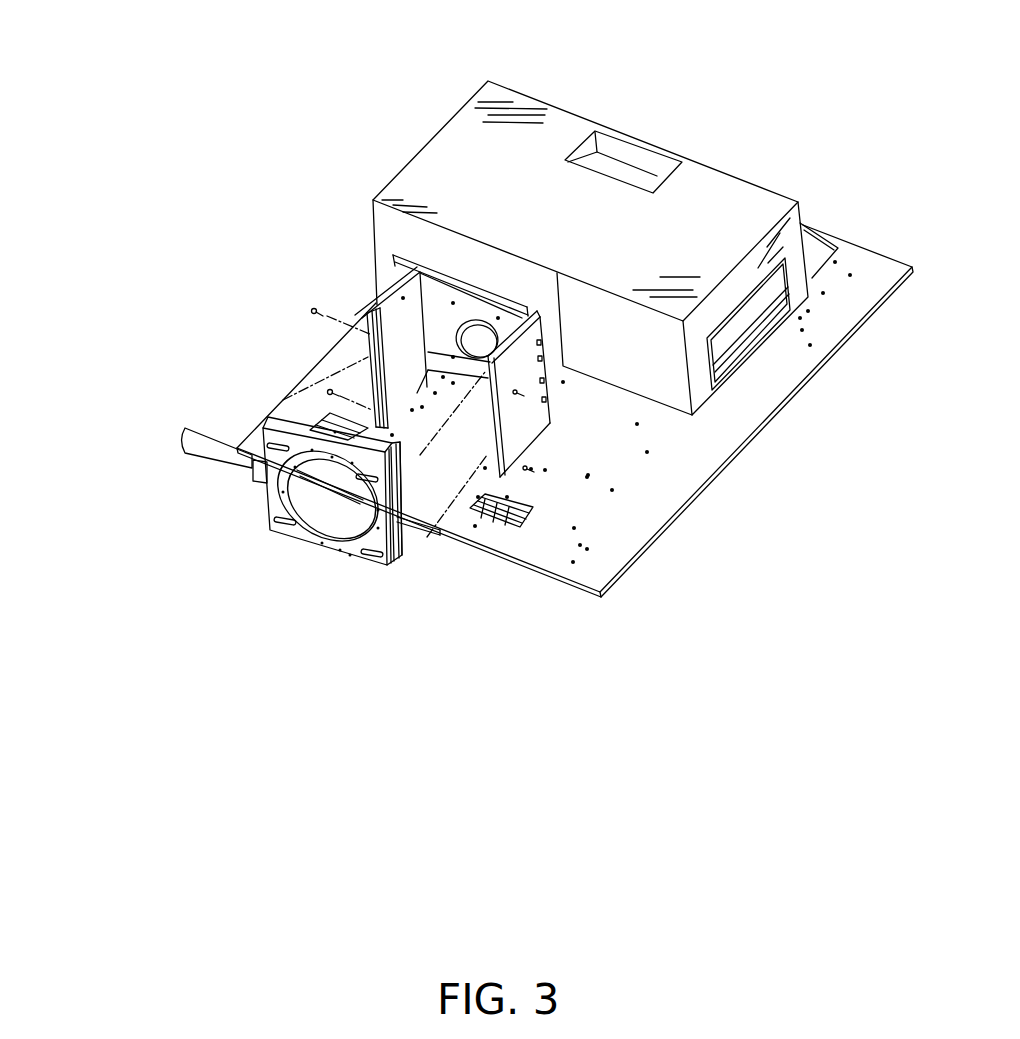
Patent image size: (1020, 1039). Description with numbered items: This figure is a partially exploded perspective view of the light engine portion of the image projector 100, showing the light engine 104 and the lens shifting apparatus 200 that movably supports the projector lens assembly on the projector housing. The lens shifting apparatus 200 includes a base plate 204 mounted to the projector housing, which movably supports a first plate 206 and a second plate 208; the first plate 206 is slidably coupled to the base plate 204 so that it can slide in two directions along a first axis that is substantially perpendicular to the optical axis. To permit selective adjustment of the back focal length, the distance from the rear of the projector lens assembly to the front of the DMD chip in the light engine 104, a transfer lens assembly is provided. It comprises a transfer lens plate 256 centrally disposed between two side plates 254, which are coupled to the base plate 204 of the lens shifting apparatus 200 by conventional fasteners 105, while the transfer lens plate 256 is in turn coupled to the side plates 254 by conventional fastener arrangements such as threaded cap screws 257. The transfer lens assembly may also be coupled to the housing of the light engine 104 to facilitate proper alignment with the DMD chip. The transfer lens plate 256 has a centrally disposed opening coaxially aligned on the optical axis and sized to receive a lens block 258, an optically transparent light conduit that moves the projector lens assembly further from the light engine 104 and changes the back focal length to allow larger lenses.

The image projector 100 is at (742, 84).
The light engine 104 is at (700, 205).
The fasteners 105 is at (533, 470).
The lens shifting apparatus 200 is at (218, 383).
The base plate 204 is at (400, 556).
The first plate 206 is at (352, 562).
The second plate 208 is at (395, 545).
The side plates 254 is at (372, 305).
The transfer lens plate 256 is at (437, 312).
The threaded cap screws 257 is at (565, 365).
The lens block 258 is at (475, 340).